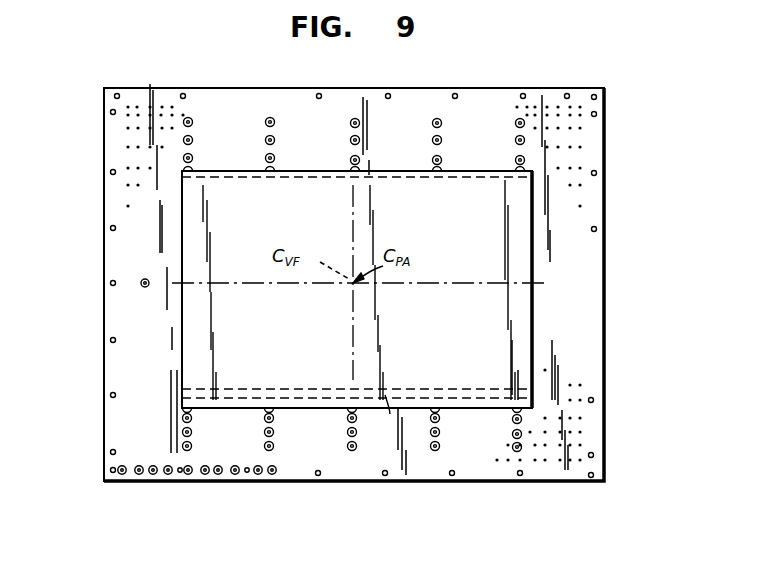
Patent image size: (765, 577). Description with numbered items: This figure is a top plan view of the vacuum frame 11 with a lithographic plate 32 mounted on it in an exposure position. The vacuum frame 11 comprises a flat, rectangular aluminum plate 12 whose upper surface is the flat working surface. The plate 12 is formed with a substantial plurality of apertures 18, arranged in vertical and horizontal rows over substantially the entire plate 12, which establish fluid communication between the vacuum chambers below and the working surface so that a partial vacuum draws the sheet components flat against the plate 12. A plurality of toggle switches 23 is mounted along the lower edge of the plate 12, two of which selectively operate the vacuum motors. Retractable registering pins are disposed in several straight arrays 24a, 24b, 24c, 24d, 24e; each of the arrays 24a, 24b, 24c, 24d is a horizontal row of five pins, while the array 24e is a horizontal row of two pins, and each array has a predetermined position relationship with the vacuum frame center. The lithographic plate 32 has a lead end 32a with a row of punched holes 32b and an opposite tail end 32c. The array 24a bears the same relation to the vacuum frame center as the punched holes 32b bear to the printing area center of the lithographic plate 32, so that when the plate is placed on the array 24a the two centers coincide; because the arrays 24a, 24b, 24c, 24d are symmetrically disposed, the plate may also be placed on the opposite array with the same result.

The vacuum frame 11 is at (625, 121).
The plate 12 is at (592, 201).
The apertures 18 is at (160, 100).
The toggle switches 23 is at (128, 482).
The array of registering pins 24a is at (192, 161).
The array of registering pins 24b is at (192, 140).
The array of registering pins 24c is at (192, 122).
The array of registering pins 24d is at (194, 98).
The array of registering pins 24e is at (141, 284).
The lithographic plate 32 is at (180, 318).
The lead end 32a is at (392, 412).
The punched holes 32b is at (352, 404).
The tail end 32c is at (388, 171).